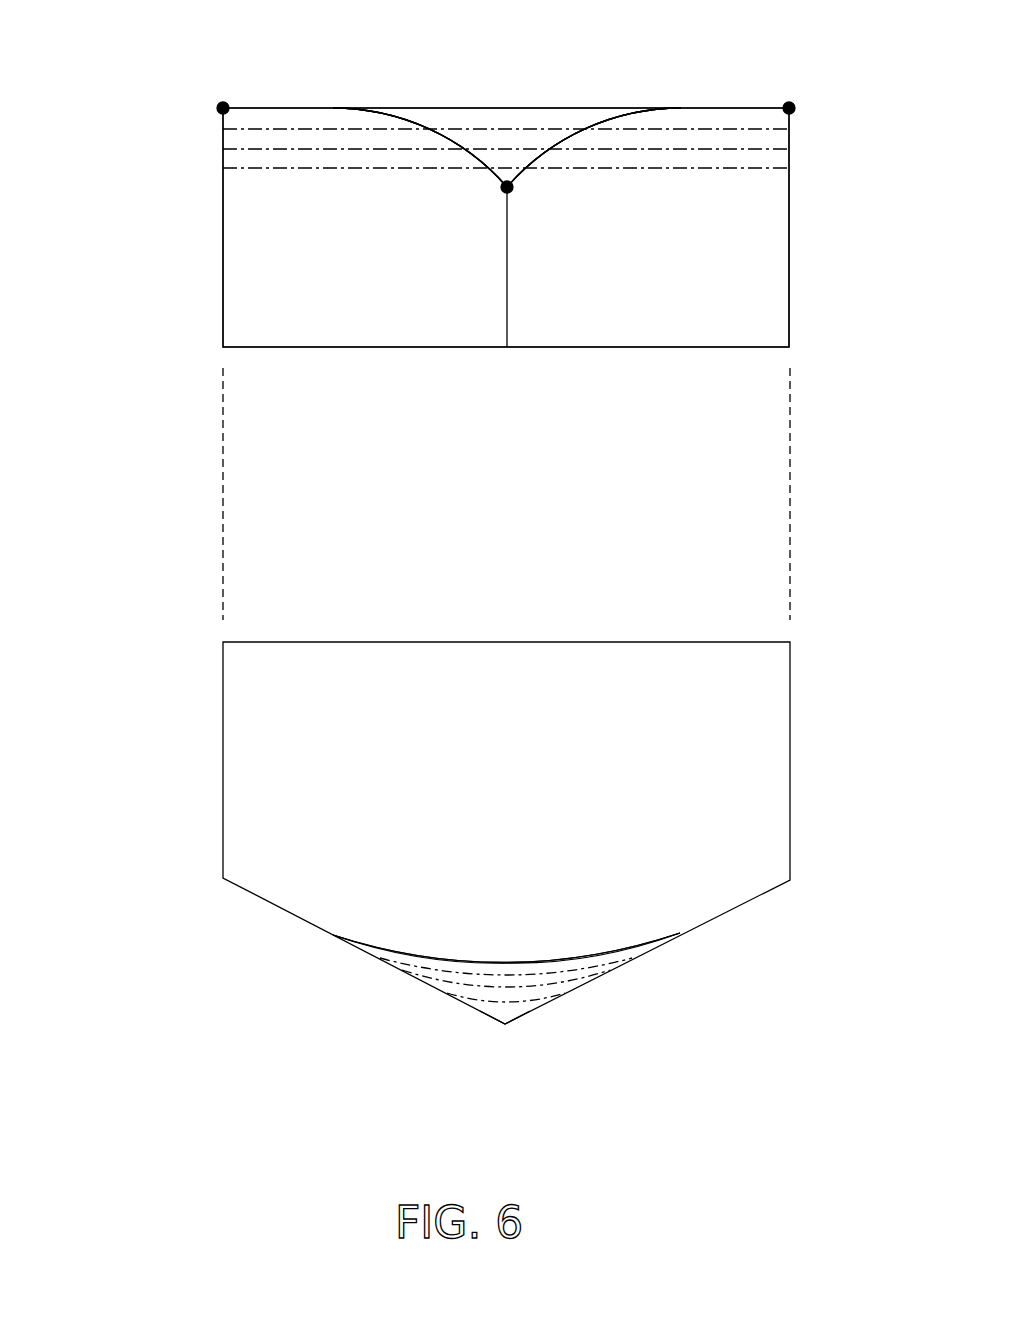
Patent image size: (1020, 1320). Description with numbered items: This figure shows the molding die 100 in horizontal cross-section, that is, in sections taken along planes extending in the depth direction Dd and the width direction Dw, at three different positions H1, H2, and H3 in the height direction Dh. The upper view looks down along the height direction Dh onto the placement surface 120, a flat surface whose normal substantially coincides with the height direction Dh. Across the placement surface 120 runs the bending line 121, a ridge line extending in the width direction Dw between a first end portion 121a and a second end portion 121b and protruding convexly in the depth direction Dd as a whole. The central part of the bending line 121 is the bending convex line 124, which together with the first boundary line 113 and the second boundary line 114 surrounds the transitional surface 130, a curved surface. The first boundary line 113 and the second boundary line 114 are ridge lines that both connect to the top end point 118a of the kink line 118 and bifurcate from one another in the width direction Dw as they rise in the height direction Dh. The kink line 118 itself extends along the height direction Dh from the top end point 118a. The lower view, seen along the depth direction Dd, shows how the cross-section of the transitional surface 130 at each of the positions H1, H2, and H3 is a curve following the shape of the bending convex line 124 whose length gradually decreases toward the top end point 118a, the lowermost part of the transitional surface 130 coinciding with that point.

The molding die 100 is at (172, 130).
The first boundary line 113 is at (378, 118).
The second boundary line 114 is at (633, 118).
The kink line 118 is at (505, 299).
The top end point 118a is at (503, 192).
The placement surface 120 is at (418, 107).
The bending line 121 is at (507, 494).
The first end portion 121a is at (223, 102).
The second end portion 121b is at (789, 102).
The bending convex line 124 is at (580, 107).
The transitional surface 130 is at (505, 140).
The height position H1 is at (767, 129).
The height position H2 is at (745, 149).
The height position H3 is at (723, 168).
The height direction Dh is at (101, 298).
The width direction Dw is at (46, 243).
The depth direction Dd is at (102, 694).